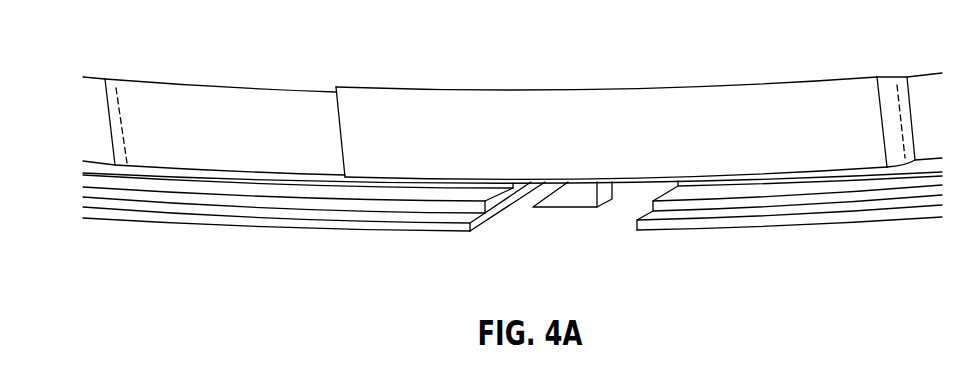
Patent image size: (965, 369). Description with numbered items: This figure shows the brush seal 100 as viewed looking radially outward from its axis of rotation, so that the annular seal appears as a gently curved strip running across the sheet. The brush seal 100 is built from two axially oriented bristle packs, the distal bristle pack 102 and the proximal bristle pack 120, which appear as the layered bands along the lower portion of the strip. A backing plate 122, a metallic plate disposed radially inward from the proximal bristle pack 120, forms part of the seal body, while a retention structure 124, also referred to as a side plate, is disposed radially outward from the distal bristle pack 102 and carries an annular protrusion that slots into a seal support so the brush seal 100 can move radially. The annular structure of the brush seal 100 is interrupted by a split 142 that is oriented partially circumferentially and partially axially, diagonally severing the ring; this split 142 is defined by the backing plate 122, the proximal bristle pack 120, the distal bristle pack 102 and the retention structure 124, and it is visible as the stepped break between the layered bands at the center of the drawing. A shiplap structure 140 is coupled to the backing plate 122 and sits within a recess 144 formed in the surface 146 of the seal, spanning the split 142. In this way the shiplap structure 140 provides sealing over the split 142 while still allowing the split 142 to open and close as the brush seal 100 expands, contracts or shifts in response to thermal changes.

The brush seal 100 is at (191, 70).
The distal bristle pack 102 is at (192, 220).
The proximal bristle pack 120 is at (317, 193).
The backing plate 122 is at (138, 120).
The retention structure 124 is at (578, 200).
The shiplap structure 140 is at (497, 107).
The split 142 is at (635, 193).
The recess 144 is at (252, 112).
The surface 146 is at (90, 97).